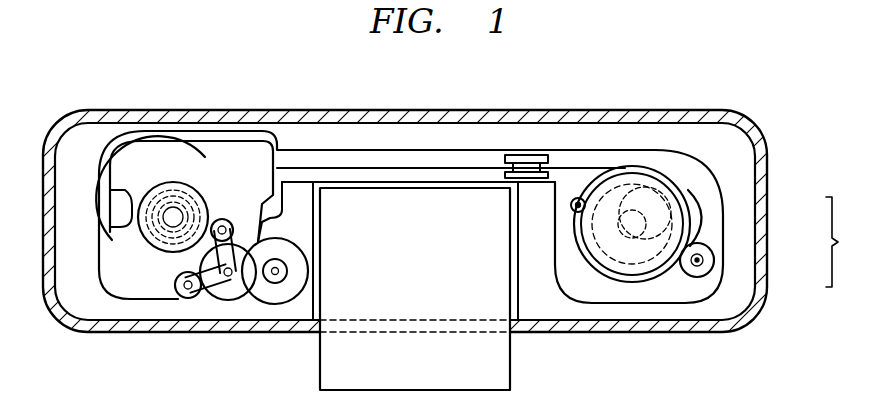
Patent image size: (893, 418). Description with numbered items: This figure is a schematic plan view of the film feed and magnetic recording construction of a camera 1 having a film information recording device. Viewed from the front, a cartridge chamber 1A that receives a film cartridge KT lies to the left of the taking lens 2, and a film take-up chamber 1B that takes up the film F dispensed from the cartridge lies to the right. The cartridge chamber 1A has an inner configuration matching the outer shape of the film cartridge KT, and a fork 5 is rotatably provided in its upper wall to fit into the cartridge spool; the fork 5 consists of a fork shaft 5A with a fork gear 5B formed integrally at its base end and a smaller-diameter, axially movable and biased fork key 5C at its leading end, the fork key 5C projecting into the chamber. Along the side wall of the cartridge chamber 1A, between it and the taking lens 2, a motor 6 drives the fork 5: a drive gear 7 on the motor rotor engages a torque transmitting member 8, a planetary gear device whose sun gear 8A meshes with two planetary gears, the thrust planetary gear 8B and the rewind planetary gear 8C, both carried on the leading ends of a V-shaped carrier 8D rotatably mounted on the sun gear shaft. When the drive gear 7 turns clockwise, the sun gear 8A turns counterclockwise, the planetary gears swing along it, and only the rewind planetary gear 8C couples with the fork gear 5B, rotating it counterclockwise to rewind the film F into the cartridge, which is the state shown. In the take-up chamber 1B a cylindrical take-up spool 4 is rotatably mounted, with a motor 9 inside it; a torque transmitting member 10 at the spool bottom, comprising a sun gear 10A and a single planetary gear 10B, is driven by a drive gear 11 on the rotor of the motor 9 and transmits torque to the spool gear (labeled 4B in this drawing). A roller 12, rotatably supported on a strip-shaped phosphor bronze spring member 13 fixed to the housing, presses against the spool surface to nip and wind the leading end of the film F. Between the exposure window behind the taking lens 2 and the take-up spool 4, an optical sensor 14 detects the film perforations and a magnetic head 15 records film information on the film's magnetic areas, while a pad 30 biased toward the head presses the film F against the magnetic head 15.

The camera 1 is at (405, 112).
The cartridge chamber 1A is at (108, 190).
The film take-up chamber 1B is at (600, 155).
The taking lens 2 is at (513, 368).
The take-up spool 4 is at (622, 270).
The take-up reel core 4B is at (663, 283).
The fork 5 is at (152, 162).
The fork shaft 5A is at (185, 195).
The fork gear 5B is at (130, 177).
The fork key 5C is at (203, 193).
The motor 6 is at (285, 305).
The drive gear 7 is at (278, 240).
The torque transmitting member 8 is at (247, 315).
The sun gear 8A is at (228, 300).
The thrust planetary gear 8B is at (195, 300).
The rewind planetary gear 8C is at (232, 224).
The carrier 8D is at (195, 266).
The motor 9 is at (684, 172).
The torque transmitting member 10 is at (848, 242).
The sun gear 10A is at (717, 215).
The planetary gear 10B is at (712, 256).
The drive gear 11 is at (625, 190).
The roller 12 is at (578, 198).
The spring member 13 is at (556, 222).
The optical sensor 14 is at (527, 153).
The magnetic head 15 is at (506, 155).
The pad 30 is at (507, 176).
The film F is at (313, 166).
The film cartridge KT is at (118, 243).